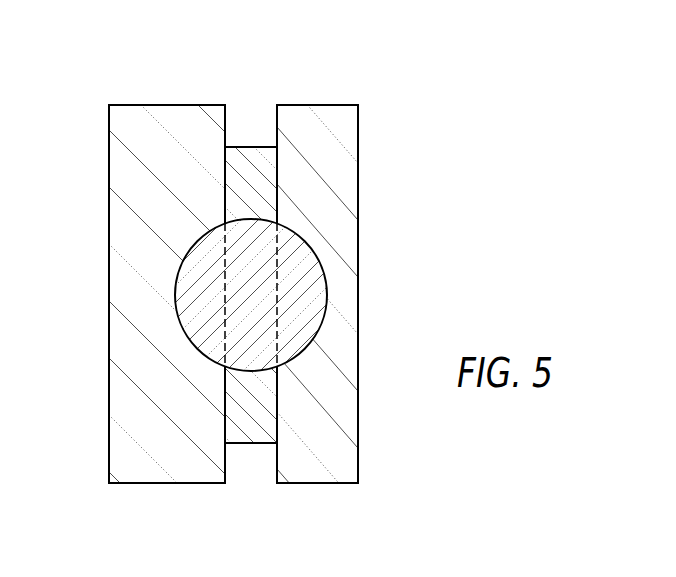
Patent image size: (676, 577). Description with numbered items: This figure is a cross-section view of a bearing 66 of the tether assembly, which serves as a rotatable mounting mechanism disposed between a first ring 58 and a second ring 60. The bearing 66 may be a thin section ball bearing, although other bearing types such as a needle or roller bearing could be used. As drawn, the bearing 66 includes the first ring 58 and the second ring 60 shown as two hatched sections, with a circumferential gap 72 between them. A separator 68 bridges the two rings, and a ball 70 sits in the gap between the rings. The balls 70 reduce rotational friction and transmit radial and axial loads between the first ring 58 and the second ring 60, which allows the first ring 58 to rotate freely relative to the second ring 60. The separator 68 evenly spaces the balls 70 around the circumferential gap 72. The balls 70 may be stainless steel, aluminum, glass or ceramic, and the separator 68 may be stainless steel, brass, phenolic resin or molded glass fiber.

The bearing 66 is at (238, 278).
The second ring 60 is at (127, 168).
The first ring 58 is at (340, 163).
The separator 68 is at (243, 167).
The circumferential gap 72 is at (265, 108).
The balls 70 is at (298, 283).